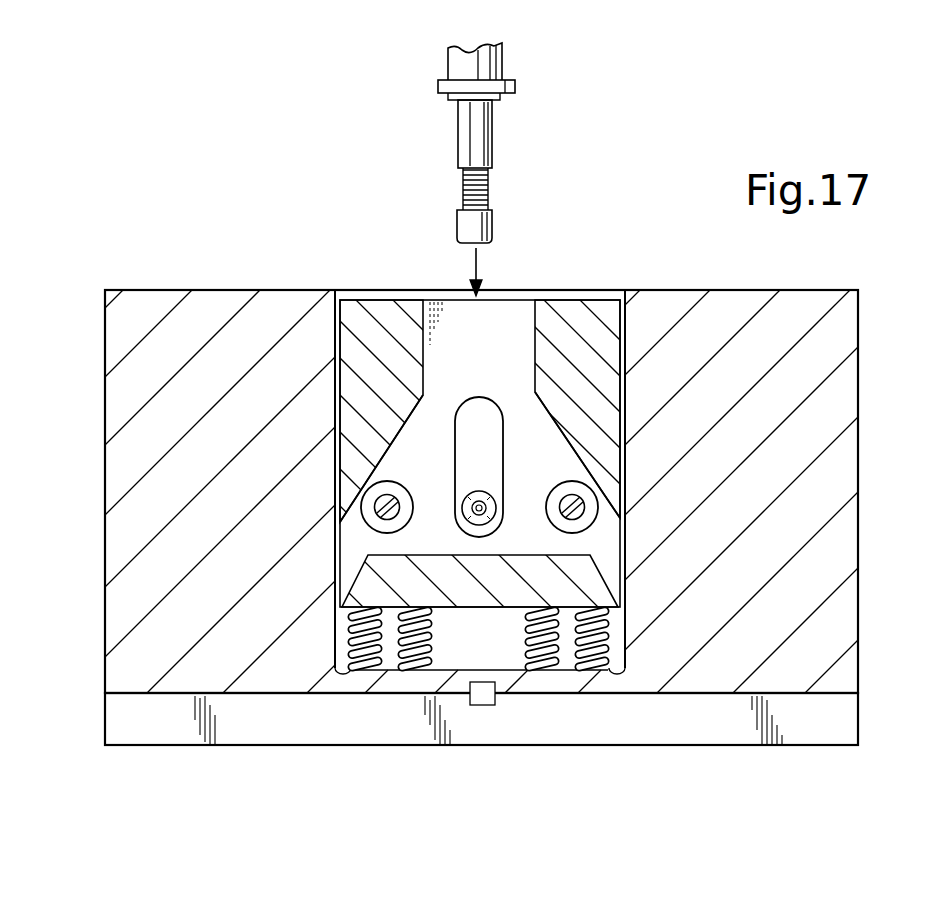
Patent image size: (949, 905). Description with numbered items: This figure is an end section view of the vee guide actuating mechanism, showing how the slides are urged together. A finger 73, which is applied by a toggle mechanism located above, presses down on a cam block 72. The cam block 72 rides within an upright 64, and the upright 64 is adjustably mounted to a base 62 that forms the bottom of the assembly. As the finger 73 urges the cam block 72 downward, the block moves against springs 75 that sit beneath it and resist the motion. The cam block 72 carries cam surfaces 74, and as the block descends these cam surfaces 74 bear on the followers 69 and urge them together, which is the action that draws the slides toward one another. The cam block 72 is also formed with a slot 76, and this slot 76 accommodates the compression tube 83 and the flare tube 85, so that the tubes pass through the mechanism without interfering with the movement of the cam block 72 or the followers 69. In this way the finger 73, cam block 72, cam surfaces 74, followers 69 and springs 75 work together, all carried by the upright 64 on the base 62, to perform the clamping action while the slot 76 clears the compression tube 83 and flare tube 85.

The base 62 is at (848, 722).
The upright 64 is at (848, 398).
The followers 69 is at (406, 524).
The cam block 72 is at (578, 300).
The finger 73 is at (495, 148).
The cam surfaces 74 is at (425, 406).
The springs 75 is at (600, 650).
The slot 76 is at (485, 410).
The compression tube 83 is at (473, 500).
The flare tube 85 is at (492, 490).